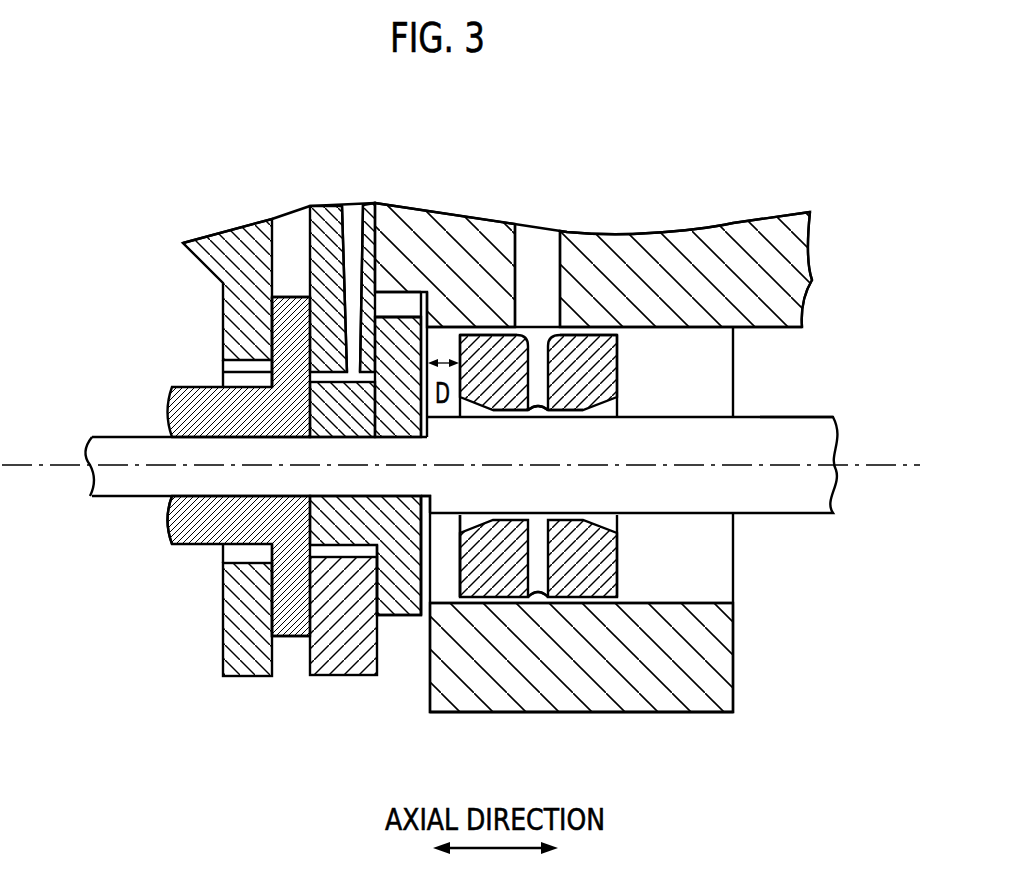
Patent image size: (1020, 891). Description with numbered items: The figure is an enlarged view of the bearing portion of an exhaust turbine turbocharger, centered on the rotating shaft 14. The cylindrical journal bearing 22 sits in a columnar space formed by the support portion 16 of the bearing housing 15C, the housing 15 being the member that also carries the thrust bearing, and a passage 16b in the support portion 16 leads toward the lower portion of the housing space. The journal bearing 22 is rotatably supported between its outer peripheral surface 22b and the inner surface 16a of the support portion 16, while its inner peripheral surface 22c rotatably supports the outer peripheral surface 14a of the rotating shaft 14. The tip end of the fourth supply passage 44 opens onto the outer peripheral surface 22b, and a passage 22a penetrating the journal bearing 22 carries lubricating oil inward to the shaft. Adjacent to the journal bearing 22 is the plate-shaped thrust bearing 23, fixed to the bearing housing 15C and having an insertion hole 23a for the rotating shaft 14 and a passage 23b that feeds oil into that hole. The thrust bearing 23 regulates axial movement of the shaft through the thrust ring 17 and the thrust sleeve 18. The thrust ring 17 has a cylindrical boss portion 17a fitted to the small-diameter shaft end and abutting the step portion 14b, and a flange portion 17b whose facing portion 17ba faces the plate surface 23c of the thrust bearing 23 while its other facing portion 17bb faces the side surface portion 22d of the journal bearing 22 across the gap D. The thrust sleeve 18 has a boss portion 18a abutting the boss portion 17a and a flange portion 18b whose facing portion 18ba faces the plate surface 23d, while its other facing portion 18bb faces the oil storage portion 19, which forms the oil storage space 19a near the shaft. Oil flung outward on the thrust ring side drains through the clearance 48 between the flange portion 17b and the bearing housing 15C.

The rotating shaft 14 is at (830, 401).
The outer peripheral surface 14a is at (787, 412).
The step portion 14b is at (417, 500).
The first housing 15 is at (648, 252).
The bearing housing 15C is at (783, 228).
The support portion 16 is at (713, 650).
The inner surface 16a is at (680, 337).
The passage 16b is at (733, 697).
The thrust ring 17 is at (363, 527).
The boss portion 17a is at (342, 527).
The flange portion 17b is at (402, 615).
The facing portion 17ba is at (400, 302).
The facing portion 17bb is at (421, 560).
The thrust sleeve 18 is at (203, 540).
The boss portion 18a is at (180, 545).
The flange portion 18b is at (292, 637).
The facing portion 18ba is at (308, 347).
The facing portion 18bb is at (272, 355).
The oil storage portion 19 is at (223, 308).
The oil storage space 19a is at (253, 230).
The journal bearing 22 is at (598, 375).
The passage 22a is at (538, 393).
The outer peripheral surface 22b is at (598, 332).
The inner peripheral surface 22c is at (567, 397).
The side surface portion 22d is at (488, 610).
The thrust bearing 23 is at (310, 262).
The insertion hole 23a is at (357, 400).
The passage 23b is at (356, 212).
The plate surface 23c is at (383, 357).
The plate surface 23d is at (250, 233).
The fourth supply passage 44 is at (562, 250).
The clearance 48 is at (380, 303).